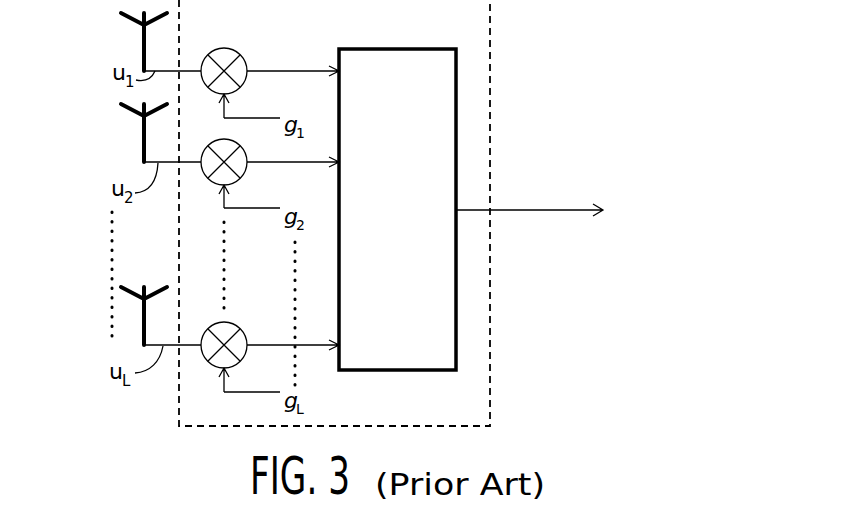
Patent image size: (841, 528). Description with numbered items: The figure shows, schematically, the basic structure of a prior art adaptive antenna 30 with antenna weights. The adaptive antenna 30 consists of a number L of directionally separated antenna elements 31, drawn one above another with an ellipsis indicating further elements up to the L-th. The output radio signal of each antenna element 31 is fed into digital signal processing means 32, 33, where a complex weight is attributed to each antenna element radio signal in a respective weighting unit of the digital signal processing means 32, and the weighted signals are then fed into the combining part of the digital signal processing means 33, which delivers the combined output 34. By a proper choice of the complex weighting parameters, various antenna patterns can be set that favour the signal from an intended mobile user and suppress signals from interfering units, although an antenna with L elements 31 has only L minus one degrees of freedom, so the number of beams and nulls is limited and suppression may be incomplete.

The adaptive antenna 30 is at (460, 410).
The antenna elements 31 is at (144, 318).
The digital signal processing means 32 is at (247, 62).
The digital signal processing means 33 is at (443, 83).
The combined output signal 34 is at (538, 207).